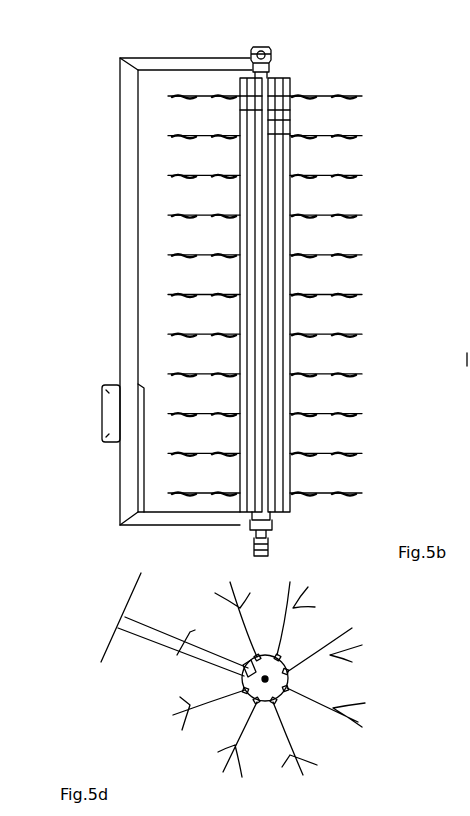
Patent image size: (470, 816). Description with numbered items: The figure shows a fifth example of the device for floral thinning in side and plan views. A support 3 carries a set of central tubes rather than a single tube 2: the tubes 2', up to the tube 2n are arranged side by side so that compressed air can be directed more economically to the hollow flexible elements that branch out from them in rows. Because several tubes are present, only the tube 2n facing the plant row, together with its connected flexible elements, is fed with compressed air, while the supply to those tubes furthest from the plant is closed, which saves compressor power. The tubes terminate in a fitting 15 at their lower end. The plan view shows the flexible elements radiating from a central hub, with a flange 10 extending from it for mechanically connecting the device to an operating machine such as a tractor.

In FIG. 5B, the support 3 is at (121, 130).
In FIG. 5B, the tube 2 is at (253, 271).
In FIG. 5B, the tube 2' is at (202, 109).
In FIG. 5B, the tube 2n is at (283, 123).
In FIG. 5B, the bottom fitting 15 is at (275, 552).
In FIG. 5D, the flange 10 is at (122, 617).